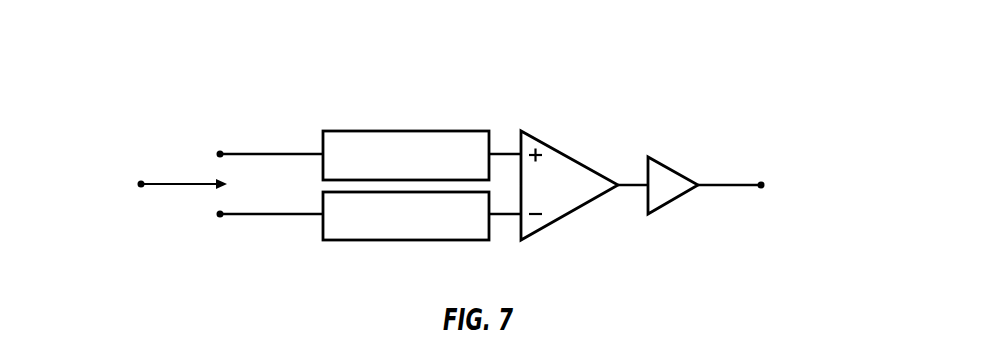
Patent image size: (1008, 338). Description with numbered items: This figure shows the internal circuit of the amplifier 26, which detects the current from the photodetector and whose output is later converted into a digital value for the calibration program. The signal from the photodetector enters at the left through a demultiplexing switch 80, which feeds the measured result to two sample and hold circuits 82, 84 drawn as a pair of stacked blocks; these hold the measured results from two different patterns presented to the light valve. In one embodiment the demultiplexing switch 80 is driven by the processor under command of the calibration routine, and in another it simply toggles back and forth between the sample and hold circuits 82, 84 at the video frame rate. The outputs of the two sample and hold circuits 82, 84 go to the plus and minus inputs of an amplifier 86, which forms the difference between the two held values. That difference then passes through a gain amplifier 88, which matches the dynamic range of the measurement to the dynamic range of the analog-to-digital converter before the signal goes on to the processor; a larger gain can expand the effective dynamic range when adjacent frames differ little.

The amplifier 26 is at (538, 57).
The demultiplexing switch 80 is at (231, 170).
The sample and hold circuit 82 is at (406, 138).
The sample and hold circuit 84 is at (406, 232).
The amplifier 86 is at (558, 182).
The gain amplifier 88 is at (691, 175).